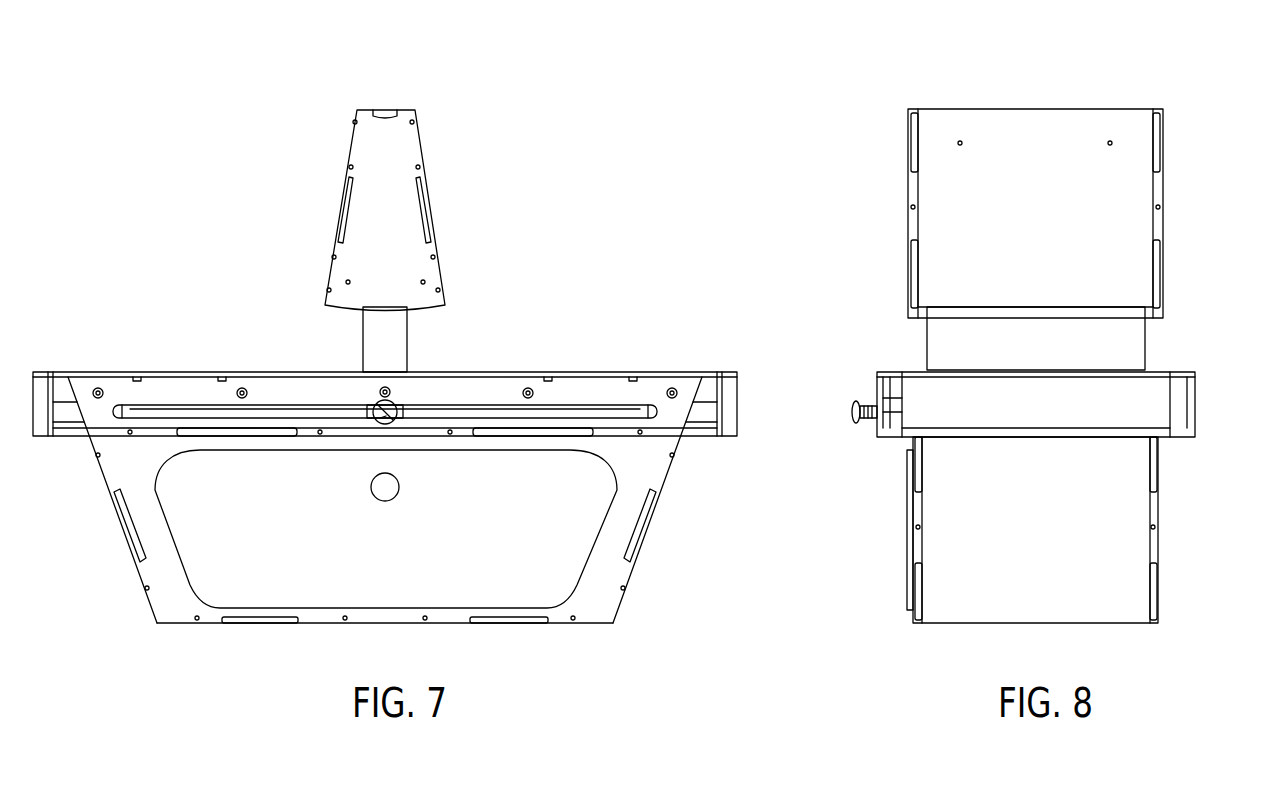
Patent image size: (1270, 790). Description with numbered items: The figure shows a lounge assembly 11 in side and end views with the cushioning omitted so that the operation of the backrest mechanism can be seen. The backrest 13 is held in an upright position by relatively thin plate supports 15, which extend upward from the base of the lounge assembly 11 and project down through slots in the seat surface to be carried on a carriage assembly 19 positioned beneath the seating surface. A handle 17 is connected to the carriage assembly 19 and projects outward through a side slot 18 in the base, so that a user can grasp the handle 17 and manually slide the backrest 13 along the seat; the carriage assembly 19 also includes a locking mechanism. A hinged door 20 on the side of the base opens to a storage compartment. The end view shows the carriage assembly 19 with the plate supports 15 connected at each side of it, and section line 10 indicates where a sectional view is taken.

In FIG. 7, the section line 10- 10 is at (385, 143).
In FIG. 7, the lounge assembly 11 is at (385, 398).
In FIG. 8, the lounge assembly 11 is at (1216, 471).
In FIG. 7, the backrest 13 is at (413, 148).
In FIG. 7, the plate supports 15 is at (400, 345).
In FIG. 8, the plate supports 15 is at (927, 335).
In FIG. 7, the handle 17 is at (395, 405).
In FIG. 8, the handle 17 is at (857, 422).
In FIG. 7, the side slot 18 is at (615, 412).
In FIG. 8, the carriage assembly 19 is at (1172, 373).
In FIG. 7, the hinged door 20 is at (598, 518).